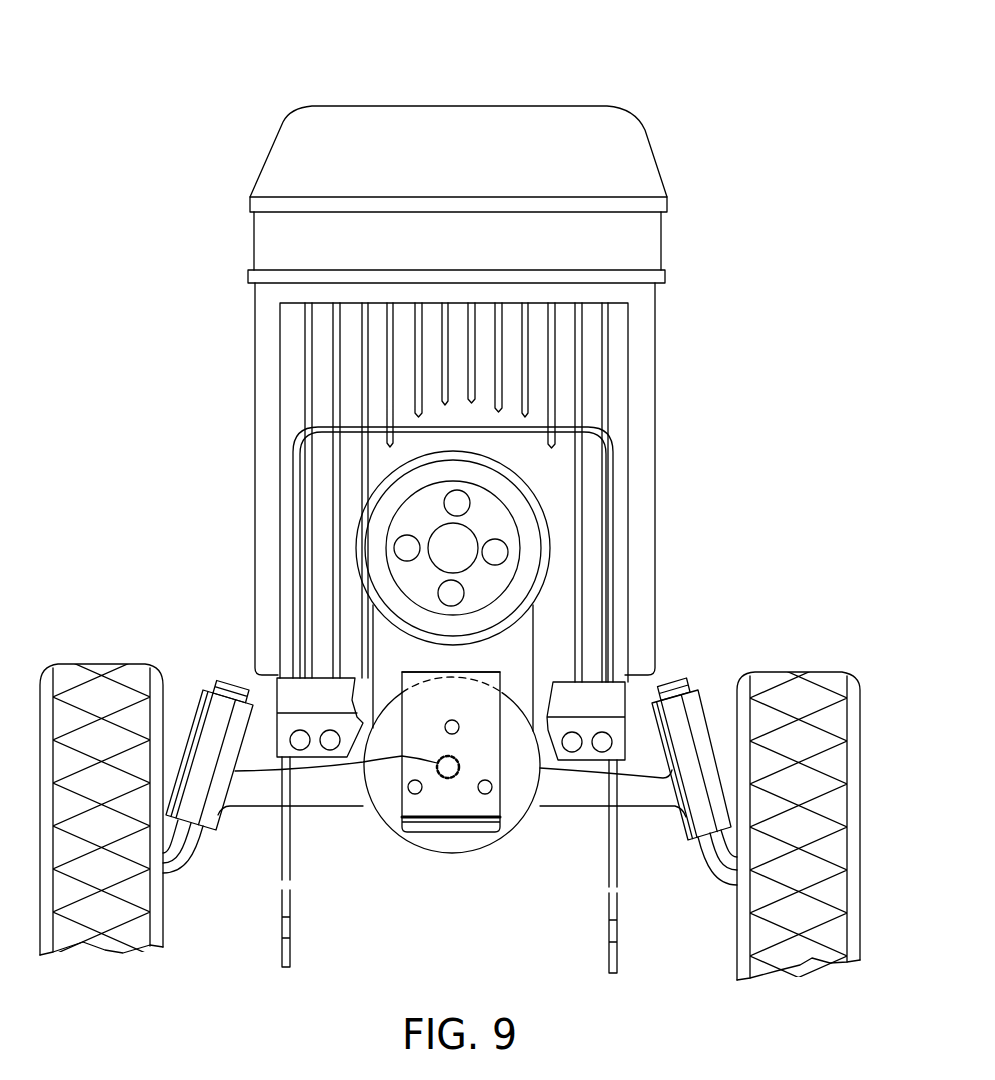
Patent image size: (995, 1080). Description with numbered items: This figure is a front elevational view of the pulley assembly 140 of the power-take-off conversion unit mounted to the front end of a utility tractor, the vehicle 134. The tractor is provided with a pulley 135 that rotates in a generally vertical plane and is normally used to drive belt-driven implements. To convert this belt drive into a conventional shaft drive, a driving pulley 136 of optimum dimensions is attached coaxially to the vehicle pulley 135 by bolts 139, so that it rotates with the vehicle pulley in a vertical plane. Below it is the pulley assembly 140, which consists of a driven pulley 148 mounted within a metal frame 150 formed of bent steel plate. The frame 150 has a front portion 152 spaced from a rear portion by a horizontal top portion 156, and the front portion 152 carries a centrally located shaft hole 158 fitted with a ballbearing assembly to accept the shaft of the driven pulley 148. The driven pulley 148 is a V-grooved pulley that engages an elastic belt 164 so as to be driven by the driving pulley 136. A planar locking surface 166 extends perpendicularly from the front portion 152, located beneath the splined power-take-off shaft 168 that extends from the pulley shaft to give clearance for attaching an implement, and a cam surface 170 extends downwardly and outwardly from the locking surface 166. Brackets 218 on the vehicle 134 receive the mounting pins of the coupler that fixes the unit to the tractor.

The vehicle 134 is at (655, 145).
The pulley 135 is at (545, 590).
The driving pulley 136 is at (538, 525).
The bolts 139 is at (493, 565).
The pulley assembly 140 is at (459, 774).
The driven pulley 148 is at (512, 828).
The frame 150 is at (402, 783).
The front portion 152 is at (468, 706).
The horizontal top portion 156 is at (467, 672).
The shaft holes 158 is at (460, 768).
The elastic belt 164 is at (373, 650).
The locking surface 166 is at (480, 815).
The power-take-off shaft 168 is at (372, 771).
The cam surface 170 is at (453, 823).
The brackets 218 is at (618, 932).